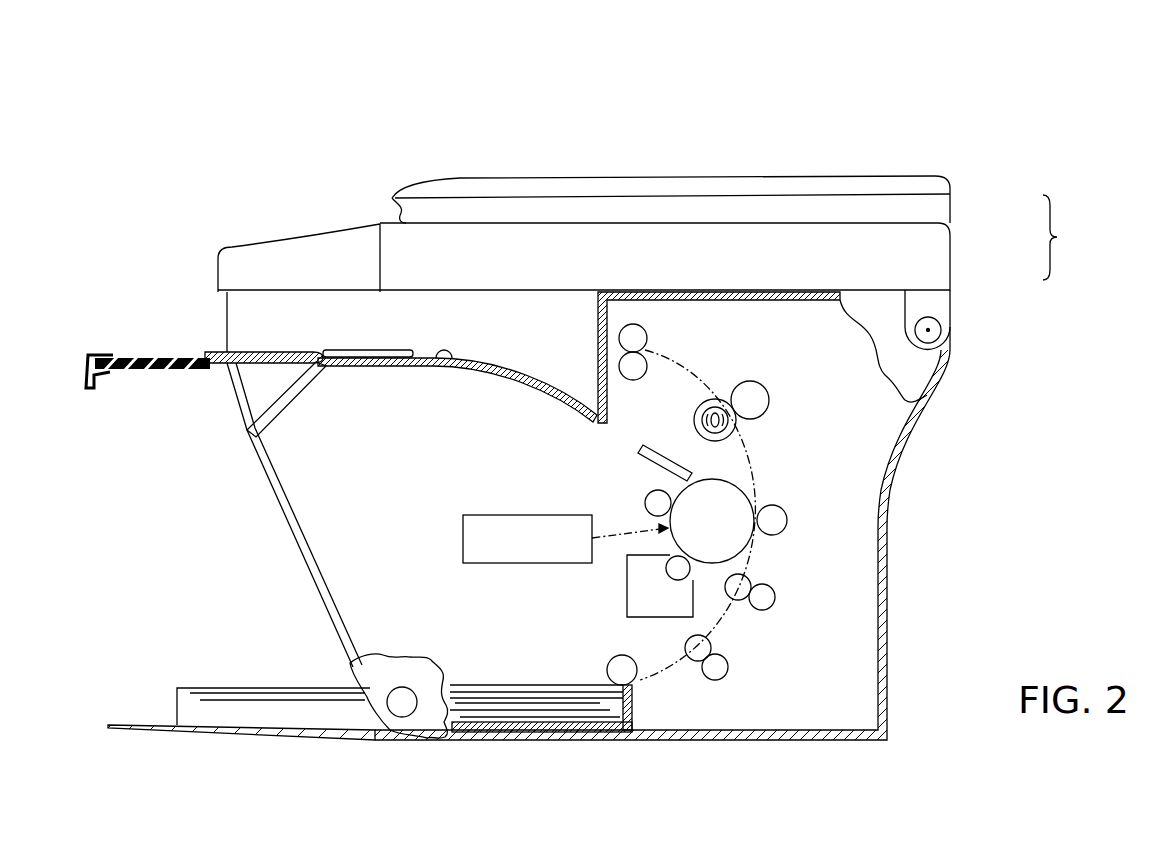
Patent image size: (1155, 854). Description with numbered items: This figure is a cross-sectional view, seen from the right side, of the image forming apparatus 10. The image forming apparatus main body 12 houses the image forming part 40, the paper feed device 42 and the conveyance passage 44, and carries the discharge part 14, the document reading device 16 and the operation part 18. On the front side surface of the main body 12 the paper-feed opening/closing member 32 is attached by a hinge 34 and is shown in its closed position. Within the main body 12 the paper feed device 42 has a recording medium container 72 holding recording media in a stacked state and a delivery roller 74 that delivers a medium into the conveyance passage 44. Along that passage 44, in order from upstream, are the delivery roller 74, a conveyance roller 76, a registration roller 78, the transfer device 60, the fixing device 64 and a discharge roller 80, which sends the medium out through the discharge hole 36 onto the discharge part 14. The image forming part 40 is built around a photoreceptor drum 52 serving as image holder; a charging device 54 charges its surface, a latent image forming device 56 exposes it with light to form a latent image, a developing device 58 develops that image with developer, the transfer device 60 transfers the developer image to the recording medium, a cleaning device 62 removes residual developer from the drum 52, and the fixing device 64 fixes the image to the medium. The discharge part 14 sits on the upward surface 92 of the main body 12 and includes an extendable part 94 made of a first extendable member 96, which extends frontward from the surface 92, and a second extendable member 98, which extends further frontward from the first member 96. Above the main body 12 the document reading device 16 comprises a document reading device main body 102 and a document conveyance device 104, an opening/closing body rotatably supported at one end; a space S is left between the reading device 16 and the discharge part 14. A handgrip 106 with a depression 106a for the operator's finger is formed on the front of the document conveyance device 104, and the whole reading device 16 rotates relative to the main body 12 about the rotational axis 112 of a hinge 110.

The image forming apparatus 10 is at (794, 68).
The image forming apparatus main body 12 is at (887, 590).
The discharge part 14 is at (360, 331).
The document reading device 16 is at (1060, 237).
The operation part 18 is at (259, 254).
The paper-feed opening/closing member 32 is at (163, 737).
The hinge 34 is at (411, 706).
The discharge hole 36 is at (598, 348).
The image forming part 40 is at (574, 478).
The paper feed device 42 is at (643, 712).
The conveyance passage 44 is at (762, 446).
The photoreceptor drum 52 is at (678, 490).
The charging device 54 is at (646, 504).
The latent image forming device 56 is at (463, 538).
The developing device 58 is at (627, 602).
The transfer device 60 is at (787, 520).
The cleaning device 62 is at (638, 450).
The fixing device 64 is at (694, 410).
The recording medium container 72 is at (494, 716).
The delivery roller 74 is at (611, 659).
The conveyance roller 76 is at (728, 666).
The registration roller 78 is at (775, 598).
The discharge roller 80 is at (647, 337).
The upward surface 92 is at (444, 360).
The extendable part 94 is at (274, 348).
The first extendable member 96 is at (248, 362).
The second extendable member 98 is at (127, 373).
The document reading device main body 102 is at (937, 257).
The document conveyance device 104 is at (937, 207).
The handgrip 106 is at (385, 204).
The depression 106a is at (381, 206).
The hinge 110 is at (941, 318).
The rotational axis 112 is at (931, 333).
The space S is at (413, 310).